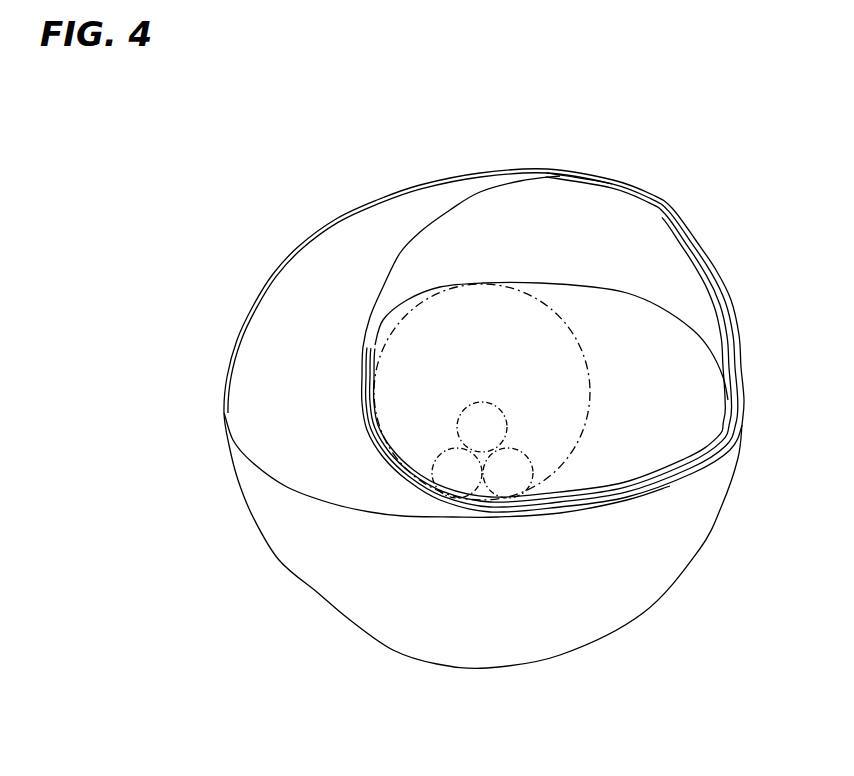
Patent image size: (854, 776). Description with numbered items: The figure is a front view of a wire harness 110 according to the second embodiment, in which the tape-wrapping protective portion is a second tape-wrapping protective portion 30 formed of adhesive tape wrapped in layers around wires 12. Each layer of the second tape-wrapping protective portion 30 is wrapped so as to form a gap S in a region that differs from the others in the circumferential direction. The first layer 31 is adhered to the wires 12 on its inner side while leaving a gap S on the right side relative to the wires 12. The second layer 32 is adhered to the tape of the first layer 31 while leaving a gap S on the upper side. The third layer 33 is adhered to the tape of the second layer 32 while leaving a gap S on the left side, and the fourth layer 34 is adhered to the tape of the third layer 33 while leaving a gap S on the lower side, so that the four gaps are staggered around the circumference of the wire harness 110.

The wire harness 110 is at (291, 94).
The second tape-wrapping protective portion 30 is at (431, 181).
The first layer 31 is at (592, 287).
The second layer 32 is at (378, 293).
The third layer 33 is at (397, 518).
The fourth layer 34 is at (643, 613).
The wires 12 is at (522, 462).
The gap S is at (605, 229).